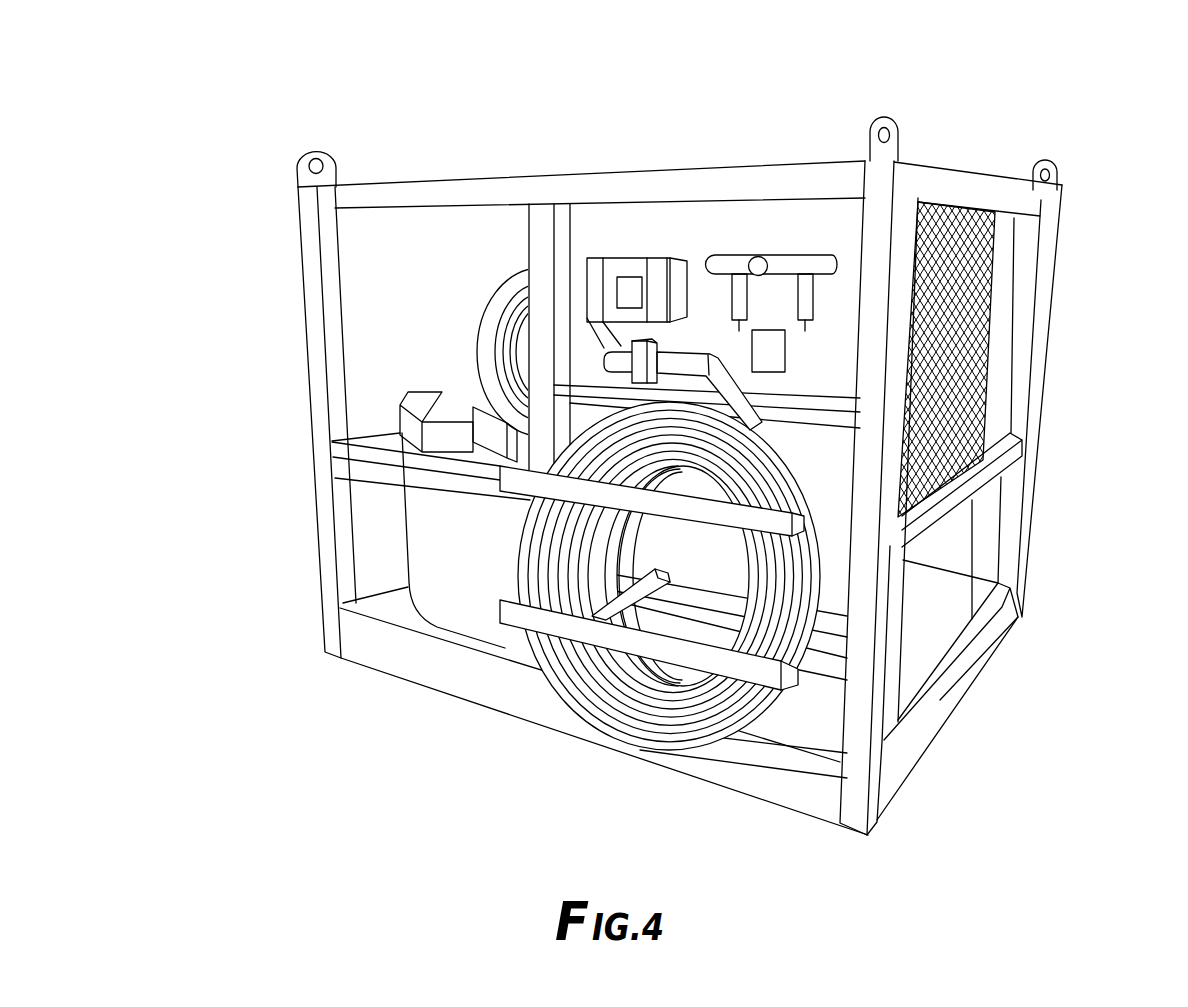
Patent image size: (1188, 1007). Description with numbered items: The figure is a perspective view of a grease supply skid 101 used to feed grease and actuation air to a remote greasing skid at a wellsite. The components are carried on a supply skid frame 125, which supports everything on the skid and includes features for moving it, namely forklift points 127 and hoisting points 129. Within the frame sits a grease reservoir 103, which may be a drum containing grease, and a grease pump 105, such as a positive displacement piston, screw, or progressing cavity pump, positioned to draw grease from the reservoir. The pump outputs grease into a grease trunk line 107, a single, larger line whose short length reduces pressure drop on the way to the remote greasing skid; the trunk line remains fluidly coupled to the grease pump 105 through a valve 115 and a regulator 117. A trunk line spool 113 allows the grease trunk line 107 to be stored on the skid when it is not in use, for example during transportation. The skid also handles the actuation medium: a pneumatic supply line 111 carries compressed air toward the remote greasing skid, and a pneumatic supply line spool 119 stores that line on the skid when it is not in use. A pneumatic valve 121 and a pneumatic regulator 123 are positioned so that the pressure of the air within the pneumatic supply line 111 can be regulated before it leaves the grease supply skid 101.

The grease supply skid 101 is at (230, 93).
The grease reservoir 103 is at (405, 515).
The grease pump 105 is at (955, 568).
The grease trunk line 107 is at (693, 752).
The pneumatic supply line 111 is at (497, 370).
The trunk line spool 113 is at (787, 685).
The valve 115 is at (600, 345).
The regulator 117 is at (640, 258).
The pneumatic supply line spool 119 is at (598, 347).
The pneumatic valve 121 is at (757, 256).
The pneumatic regulator 123 is at (802, 255).
The supply skid frame 125 is at (1043, 295).
The forklift point 127 is at (982, 674).
The hoisting point 129 is at (320, 152).